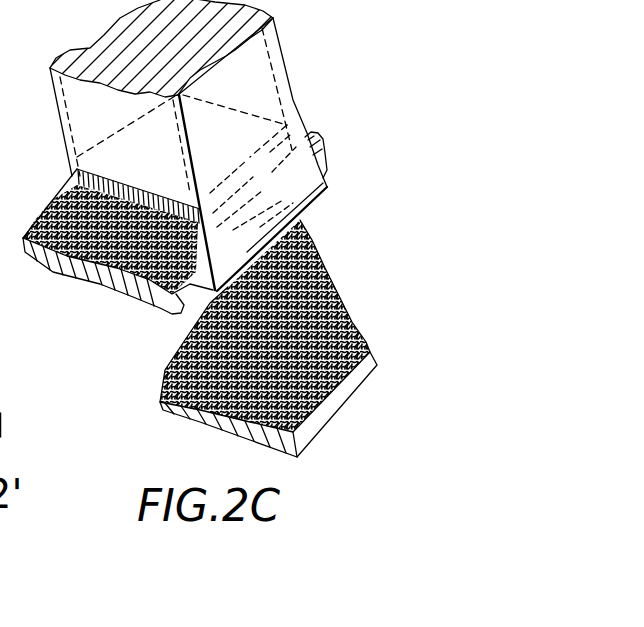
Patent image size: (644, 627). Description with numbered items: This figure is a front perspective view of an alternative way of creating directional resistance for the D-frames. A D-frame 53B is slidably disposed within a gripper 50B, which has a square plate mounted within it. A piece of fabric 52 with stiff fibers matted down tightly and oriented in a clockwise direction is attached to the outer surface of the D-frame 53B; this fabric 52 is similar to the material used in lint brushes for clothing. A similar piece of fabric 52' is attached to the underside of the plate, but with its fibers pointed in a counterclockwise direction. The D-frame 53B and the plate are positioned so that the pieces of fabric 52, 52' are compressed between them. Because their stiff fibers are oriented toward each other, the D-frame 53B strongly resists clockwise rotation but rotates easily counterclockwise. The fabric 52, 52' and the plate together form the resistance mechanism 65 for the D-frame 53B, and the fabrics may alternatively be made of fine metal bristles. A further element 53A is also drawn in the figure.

The gripper 50B is at (82, 103).
The fabric 52 is at (106, 231).
The fabric 52' is at (330, 127).
The loop fastener pad 53A is at (317, 405).
The D-frame 53B is at (180, 305).
The resistance mechanism 65 is at (225, 140).